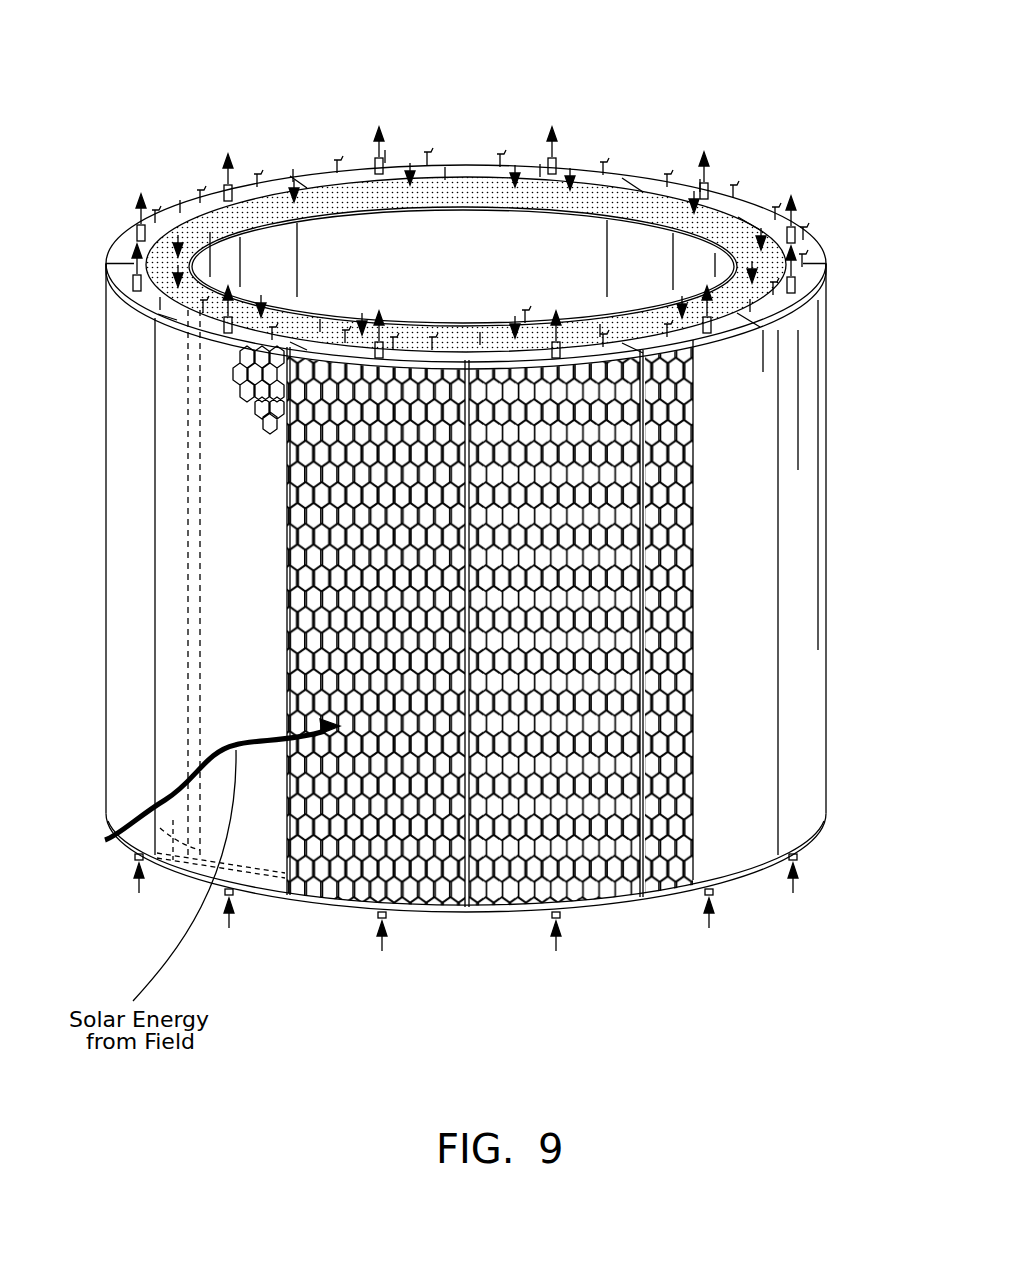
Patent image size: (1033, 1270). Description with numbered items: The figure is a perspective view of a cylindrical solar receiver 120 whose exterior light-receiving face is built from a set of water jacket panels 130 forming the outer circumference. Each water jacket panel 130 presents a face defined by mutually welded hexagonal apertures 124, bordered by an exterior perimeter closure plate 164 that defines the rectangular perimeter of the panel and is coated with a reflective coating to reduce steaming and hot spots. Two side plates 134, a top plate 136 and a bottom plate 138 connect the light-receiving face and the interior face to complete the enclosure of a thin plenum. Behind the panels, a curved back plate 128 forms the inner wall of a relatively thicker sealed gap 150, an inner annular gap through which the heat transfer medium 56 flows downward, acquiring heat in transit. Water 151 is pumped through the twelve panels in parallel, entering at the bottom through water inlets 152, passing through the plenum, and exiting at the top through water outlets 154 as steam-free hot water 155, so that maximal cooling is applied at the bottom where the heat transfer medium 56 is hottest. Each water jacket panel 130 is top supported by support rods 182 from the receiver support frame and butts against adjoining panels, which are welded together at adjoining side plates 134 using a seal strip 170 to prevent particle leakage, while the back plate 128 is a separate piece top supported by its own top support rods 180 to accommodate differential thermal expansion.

The solar receiver 120 is at (93, 264).
The apertures 124 is at (292, 715).
The back plate 128 is at (627, 300).
The water jacket panels 130 is at (222, 415).
The side plates 134 is at (178, 838).
The top plate 136 is at (453, 182).
The bottom plate 138 is at (240, 882).
The sealed gap 150 is at (517, 165).
The water 151 is at (383, 945).
The water inlets 152 is at (548, 917).
The water outlets 154 is at (233, 176).
The hot water 155 is at (192, 200).
The exterior perimeter closure plate 164 is at (292, 470).
The seal strip 170 is at (195, 490).
The top support rods 180 is at (548, 300).
The support rods 182 is at (716, 190).
The heat transfer medium 56 is at (762, 268).